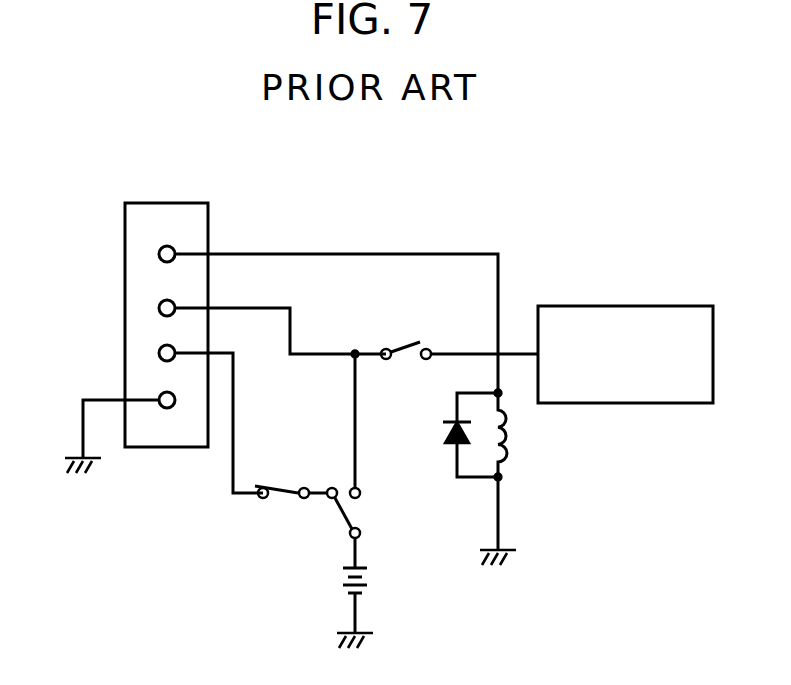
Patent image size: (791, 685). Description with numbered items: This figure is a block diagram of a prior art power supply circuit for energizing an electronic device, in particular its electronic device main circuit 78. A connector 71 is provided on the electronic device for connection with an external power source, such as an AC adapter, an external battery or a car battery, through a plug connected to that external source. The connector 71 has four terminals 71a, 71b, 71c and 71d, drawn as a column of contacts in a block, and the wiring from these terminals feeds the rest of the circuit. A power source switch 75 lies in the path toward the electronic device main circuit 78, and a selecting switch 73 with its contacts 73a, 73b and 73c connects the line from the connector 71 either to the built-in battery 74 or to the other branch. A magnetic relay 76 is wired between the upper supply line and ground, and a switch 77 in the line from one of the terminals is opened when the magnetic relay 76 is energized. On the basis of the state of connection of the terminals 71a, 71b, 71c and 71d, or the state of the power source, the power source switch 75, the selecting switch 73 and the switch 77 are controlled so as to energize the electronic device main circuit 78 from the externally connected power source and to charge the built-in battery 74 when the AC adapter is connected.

The connector 71 is at (202, 203).
The terminal 71a is at (159, 252).
The terminal 71b is at (159, 306).
The terminal 71c is at (159, 352).
The terminal 71d is at (159, 395).
The selecting switch 73 is at (362, 464).
The selecting switch contact 73a is at (332, 487).
The selecting switch contact 73b is at (357, 488).
The selecting switch contact 73c is at (359, 537).
The built-in battery 74 is at (375, 593).
The power source switch 75 is at (444, 333).
The magnetic relay 76 is at (495, 477).
The switch 77 is at (291, 517).
The electronic device main circuit 78 is at (680, 306).